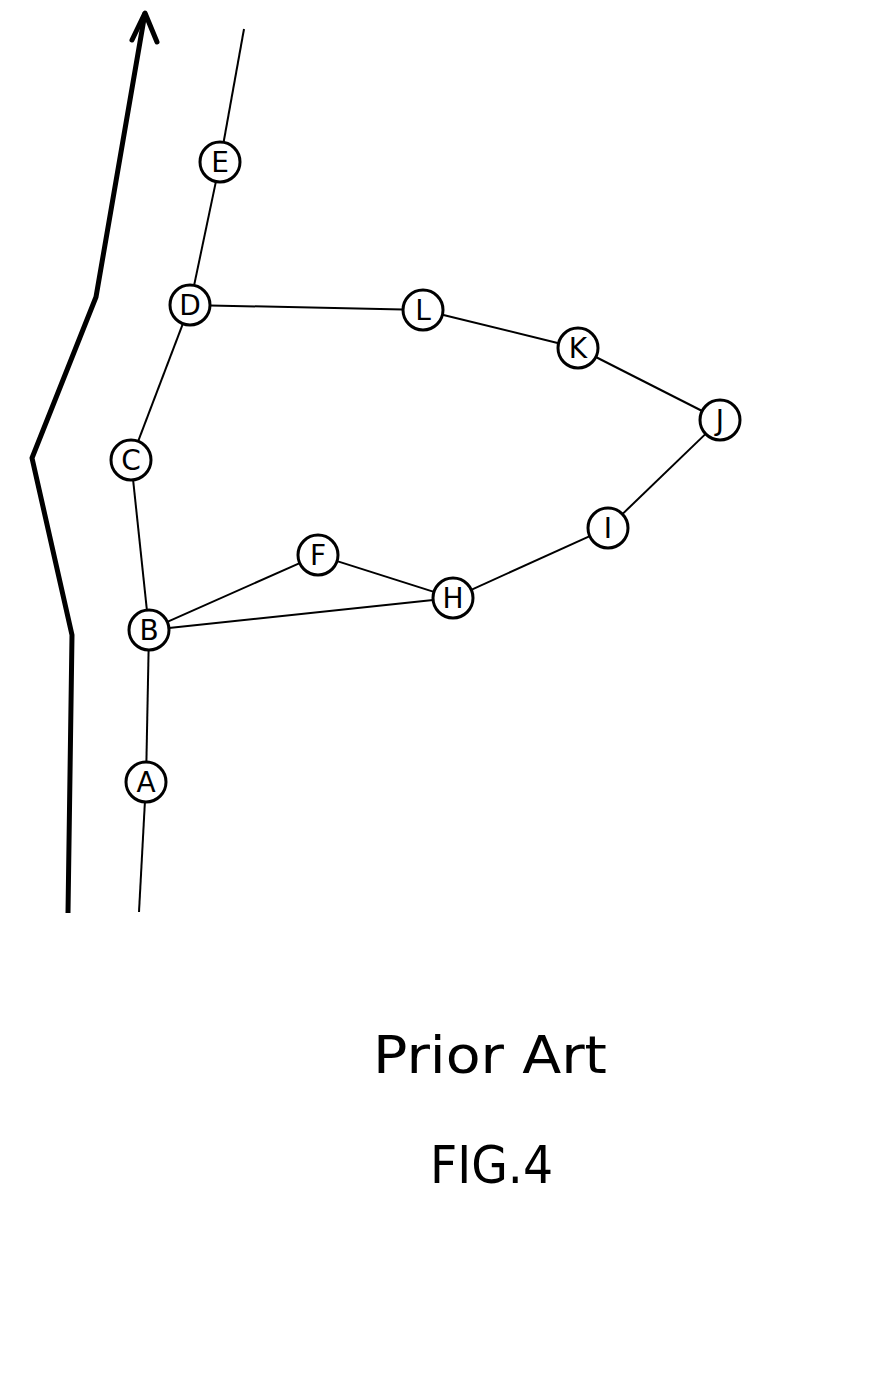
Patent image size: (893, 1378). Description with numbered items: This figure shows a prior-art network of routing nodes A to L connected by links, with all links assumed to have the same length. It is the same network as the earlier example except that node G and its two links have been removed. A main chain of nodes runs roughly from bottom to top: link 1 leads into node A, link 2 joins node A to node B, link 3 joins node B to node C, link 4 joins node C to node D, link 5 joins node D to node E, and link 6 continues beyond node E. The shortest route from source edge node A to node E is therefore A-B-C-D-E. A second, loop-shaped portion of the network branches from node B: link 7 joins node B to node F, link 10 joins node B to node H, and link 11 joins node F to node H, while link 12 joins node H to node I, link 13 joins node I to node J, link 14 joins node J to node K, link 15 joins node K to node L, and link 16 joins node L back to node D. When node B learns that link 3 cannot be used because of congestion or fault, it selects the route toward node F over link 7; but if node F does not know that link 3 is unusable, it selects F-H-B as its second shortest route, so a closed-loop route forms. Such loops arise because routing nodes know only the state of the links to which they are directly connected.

The link 1 is at (130, 857).
The link 2 is at (133, 706).
The link 3 is at (125, 545).
The link 4 is at (160, 383).
The link 5 is at (199, 234).
The link 6 is at (226, 85).
The link 7 is at (233, 592).
The link 10 is at (301, 632).
The link 11 is at (385, 563).
The link 12 is at (530, 570).
The link 13 is at (663, 474).
The link 14 is at (649, 376).
The link 15 is at (500, 316).
The link 16 is at (306, 288).